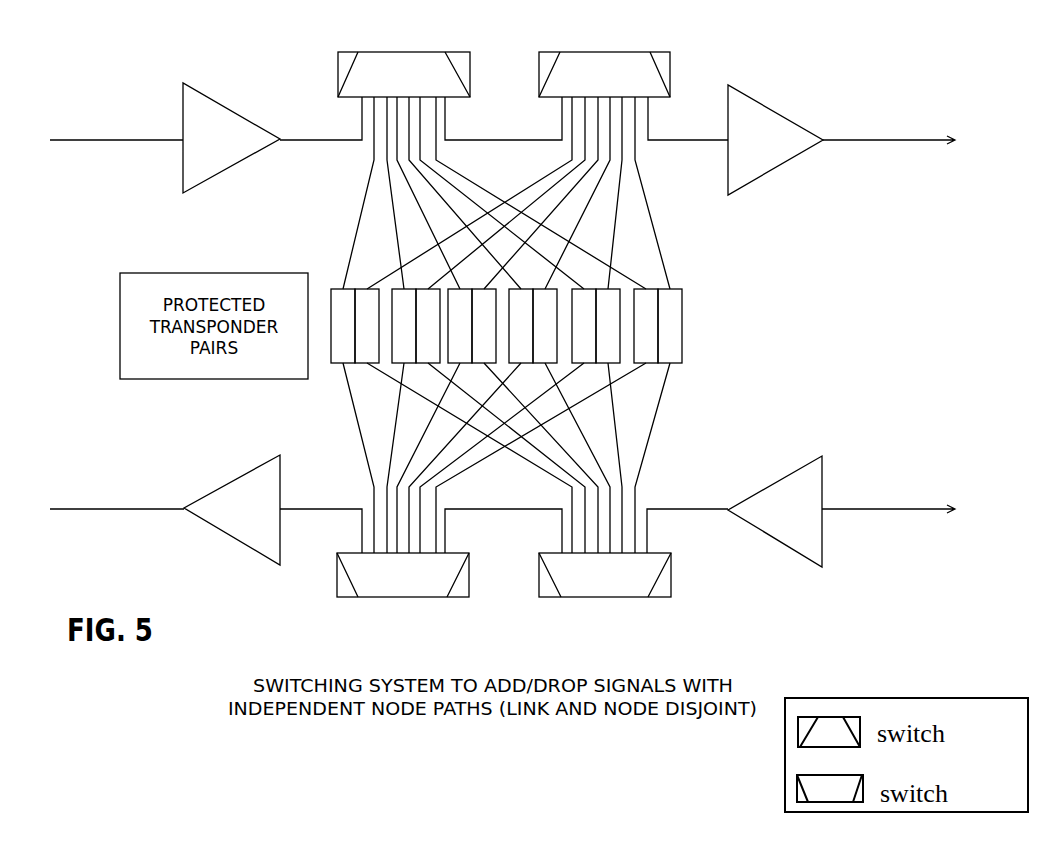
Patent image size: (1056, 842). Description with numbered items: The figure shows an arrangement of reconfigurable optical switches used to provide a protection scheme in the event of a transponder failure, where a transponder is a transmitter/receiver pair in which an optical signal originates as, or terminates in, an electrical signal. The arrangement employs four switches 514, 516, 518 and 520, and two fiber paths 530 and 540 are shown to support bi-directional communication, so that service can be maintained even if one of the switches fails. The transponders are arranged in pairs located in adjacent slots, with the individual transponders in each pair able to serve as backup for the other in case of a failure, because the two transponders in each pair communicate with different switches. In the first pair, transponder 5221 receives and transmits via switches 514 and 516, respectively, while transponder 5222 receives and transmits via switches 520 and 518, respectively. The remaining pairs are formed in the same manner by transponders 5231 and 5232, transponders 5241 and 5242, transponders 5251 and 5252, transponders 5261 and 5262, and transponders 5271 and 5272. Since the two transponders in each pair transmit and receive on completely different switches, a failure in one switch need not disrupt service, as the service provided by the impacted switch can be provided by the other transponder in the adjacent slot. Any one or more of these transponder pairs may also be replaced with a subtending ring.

The switch 514 is at (402, 50).
The switch 518 is at (607, 50).
The switch 516 is at (402, 597).
The switch 520 is at (607, 597).
The fiber path 530 is at (887, 139).
The fiber path 540 is at (885, 508).
The transponder 5221 is at (333, 288).
The transponder 5222 is at (362, 289).
The transponder 5231 is at (400, 363).
The transponder 5232 is at (418, 289).
The transponder 5241 is at (462, 363).
The transponder 5242 is at (480, 289).
The transponder 5251 is at (520, 363).
The transponder 5252 is at (545, 289).
The transponder 5261 is at (585, 363).
The transponder 5262 is at (610, 289).
The transponder 5271 is at (652, 363).
The transponder 5272 is at (685, 327).